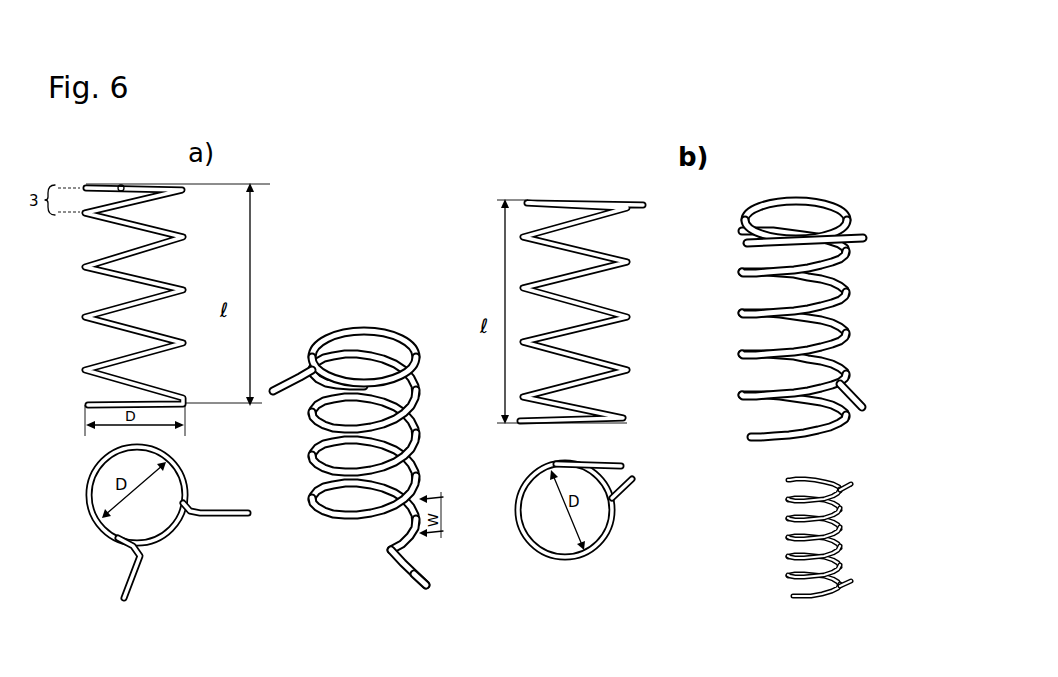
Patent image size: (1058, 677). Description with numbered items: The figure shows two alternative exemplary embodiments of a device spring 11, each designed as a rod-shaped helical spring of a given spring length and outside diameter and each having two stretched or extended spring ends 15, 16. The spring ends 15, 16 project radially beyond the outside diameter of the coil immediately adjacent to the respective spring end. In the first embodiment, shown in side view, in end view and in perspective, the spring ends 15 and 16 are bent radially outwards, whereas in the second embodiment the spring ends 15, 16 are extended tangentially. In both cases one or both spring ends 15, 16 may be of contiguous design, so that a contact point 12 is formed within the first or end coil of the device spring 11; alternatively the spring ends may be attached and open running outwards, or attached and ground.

The device spring 11 is at (186, 237).
The contact point 12 is at (417, 553).
The spring end 15 is at (227, 410).
The spring end 16 is at (125, 184).